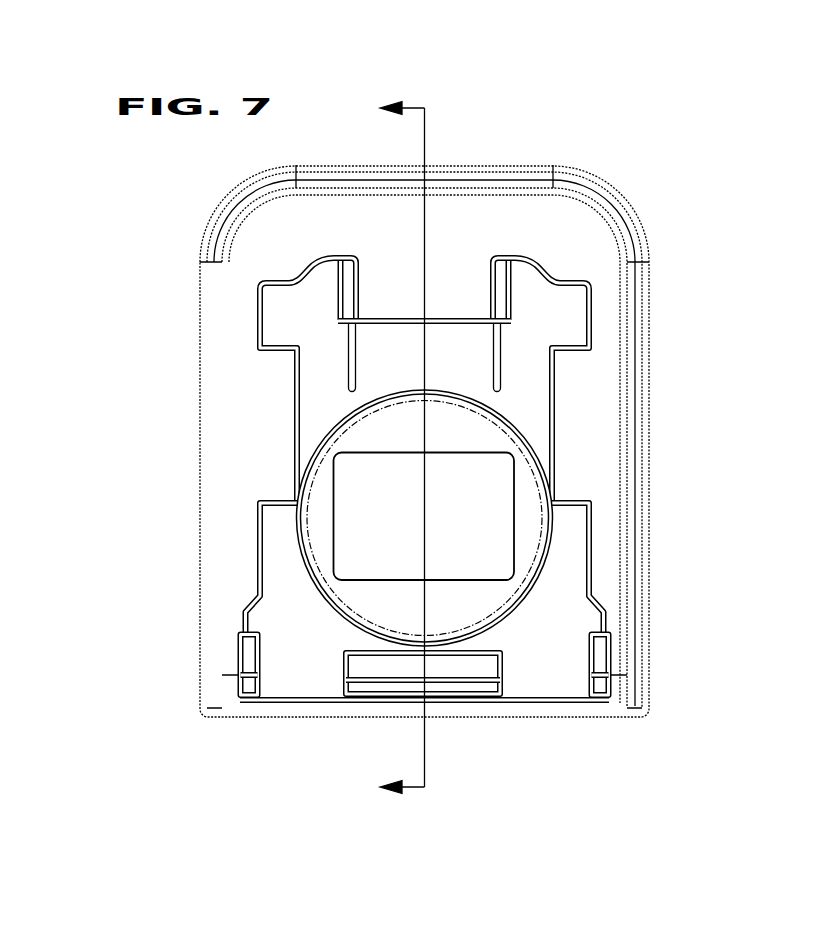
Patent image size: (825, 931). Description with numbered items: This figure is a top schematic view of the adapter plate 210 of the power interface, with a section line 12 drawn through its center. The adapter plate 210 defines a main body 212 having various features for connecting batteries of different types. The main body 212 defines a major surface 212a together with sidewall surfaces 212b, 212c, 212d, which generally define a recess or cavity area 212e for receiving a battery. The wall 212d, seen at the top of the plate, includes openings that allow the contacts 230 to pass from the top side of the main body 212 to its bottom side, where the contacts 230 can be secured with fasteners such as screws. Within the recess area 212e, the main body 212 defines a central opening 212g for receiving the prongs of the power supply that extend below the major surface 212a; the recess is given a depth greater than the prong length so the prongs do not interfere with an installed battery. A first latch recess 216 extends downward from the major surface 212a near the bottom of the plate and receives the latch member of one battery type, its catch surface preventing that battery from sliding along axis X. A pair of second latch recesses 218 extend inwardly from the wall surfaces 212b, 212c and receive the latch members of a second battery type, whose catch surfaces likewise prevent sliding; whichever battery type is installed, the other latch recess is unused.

The adapter plate 210 is at (622, 195).
The main body 212 is at (642, 228).
The major surface 212a is at (315, 615).
The sidewall surface 212b is at (256, 577).
The sidewall surface 212c is at (590, 548).
The sidewall surface 212d is at (394, 321).
The recess or cavity area 212e is at (312, 540).
The central opening 212g is at (350, 502).
The first latch recess 216 is at (405, 685).
The second latch recess 218 is at (240, 694).
The contact 230 is at (345, 368).
The section line 12- 12 is at (387, 449).